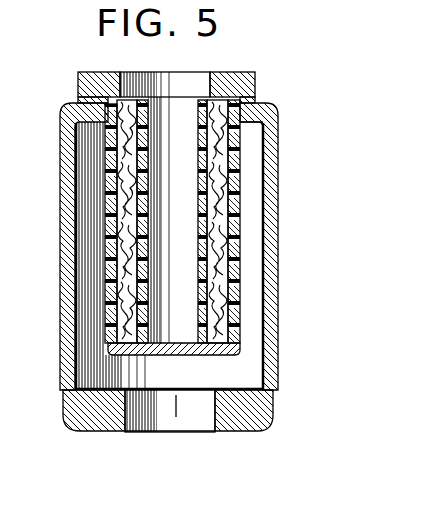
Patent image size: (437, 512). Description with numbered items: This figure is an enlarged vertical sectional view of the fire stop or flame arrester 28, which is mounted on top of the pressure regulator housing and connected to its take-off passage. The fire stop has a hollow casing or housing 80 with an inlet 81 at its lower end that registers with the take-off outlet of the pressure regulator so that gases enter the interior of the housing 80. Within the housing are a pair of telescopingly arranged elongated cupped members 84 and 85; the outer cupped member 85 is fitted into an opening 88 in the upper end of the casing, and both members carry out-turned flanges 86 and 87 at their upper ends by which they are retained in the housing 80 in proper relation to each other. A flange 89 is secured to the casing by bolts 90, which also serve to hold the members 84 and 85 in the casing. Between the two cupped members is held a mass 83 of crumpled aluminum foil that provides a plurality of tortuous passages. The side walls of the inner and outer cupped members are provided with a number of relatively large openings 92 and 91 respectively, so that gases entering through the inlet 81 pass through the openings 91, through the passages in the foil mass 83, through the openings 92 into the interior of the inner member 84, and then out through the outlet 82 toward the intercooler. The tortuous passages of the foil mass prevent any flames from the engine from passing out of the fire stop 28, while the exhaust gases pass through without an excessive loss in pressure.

The fire stop 28 is at (342, 263).
The housing 80 is at (274, 239).
The inlet 81 is at (217, 413).
The outlet 82 is at (208, 96).
The mass of crumpled foil 83 is at (236, 194).
The inner cupped member 84 is at (212, 292).
The outer cupped member 85 is at (239, 346).
The out-turned flange 86 is at (218, 98).
The out-turned flange 87 is at (249, 99).
The opening 88 is at (238, 125).
The flange 89 is at (80, 86).
The bolts 90 is at (73, 365).
The openings 91 is at (110, 157).
The openings 92 is at (142, 230).